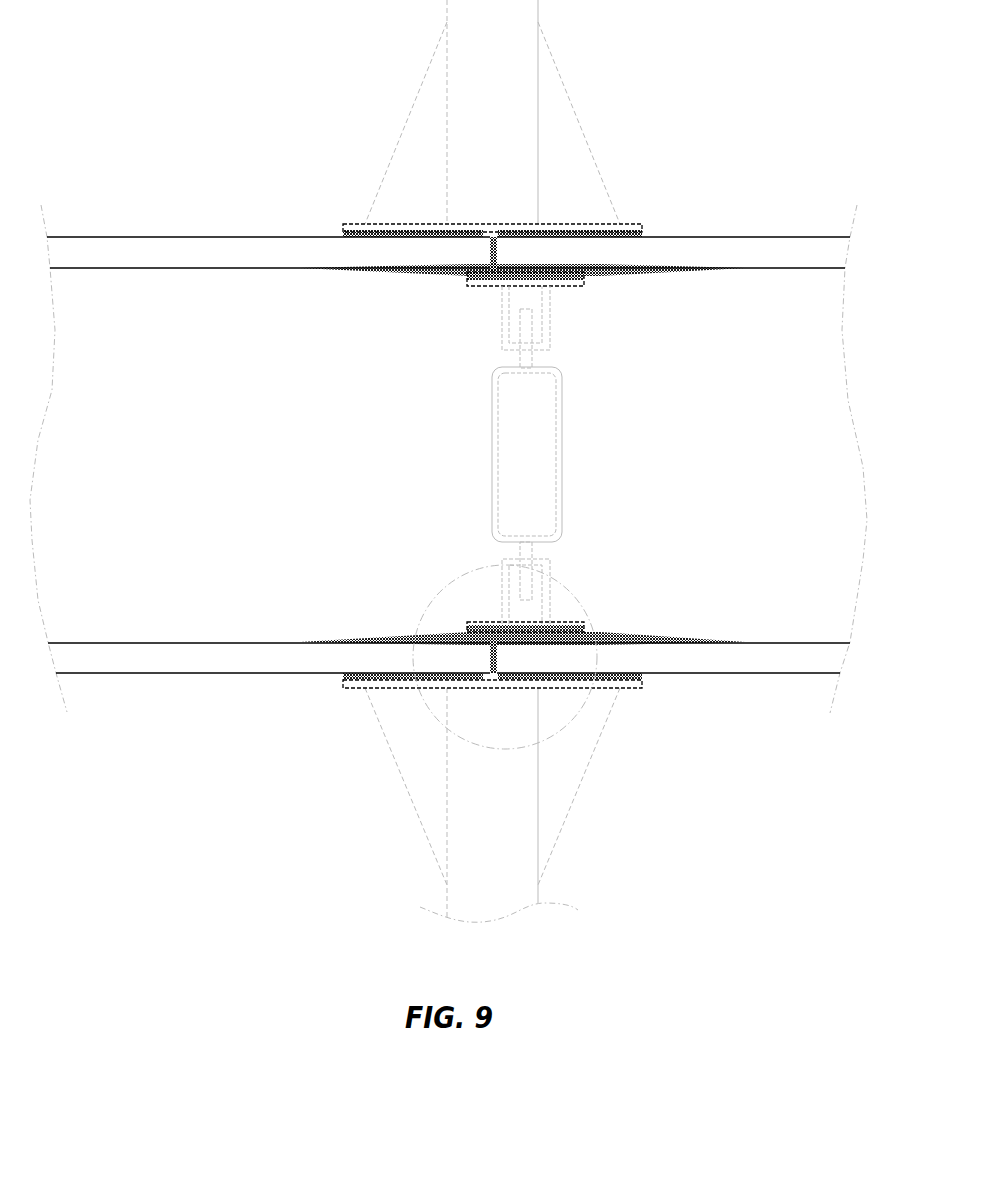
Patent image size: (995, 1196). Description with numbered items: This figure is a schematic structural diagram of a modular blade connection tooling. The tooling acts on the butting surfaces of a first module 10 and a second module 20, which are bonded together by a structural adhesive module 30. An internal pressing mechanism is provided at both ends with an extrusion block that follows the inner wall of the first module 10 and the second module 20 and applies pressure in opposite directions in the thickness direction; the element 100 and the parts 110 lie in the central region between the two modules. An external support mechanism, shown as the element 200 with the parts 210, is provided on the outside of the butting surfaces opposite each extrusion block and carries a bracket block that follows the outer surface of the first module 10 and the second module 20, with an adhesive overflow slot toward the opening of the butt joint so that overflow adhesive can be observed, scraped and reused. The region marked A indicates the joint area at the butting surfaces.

The first module 10 is at (217, 252).
The second module 20 is at (740, 250).
The structural adhesive module 30 is at (613, 272).
The damping connector 100 is at (497, 455).
The connecting plate 110 is at (473, 277).
The column 200 is at (515, 120).
The column end plate 210 is at (541, 226).
The detail region A is at (582, 608).